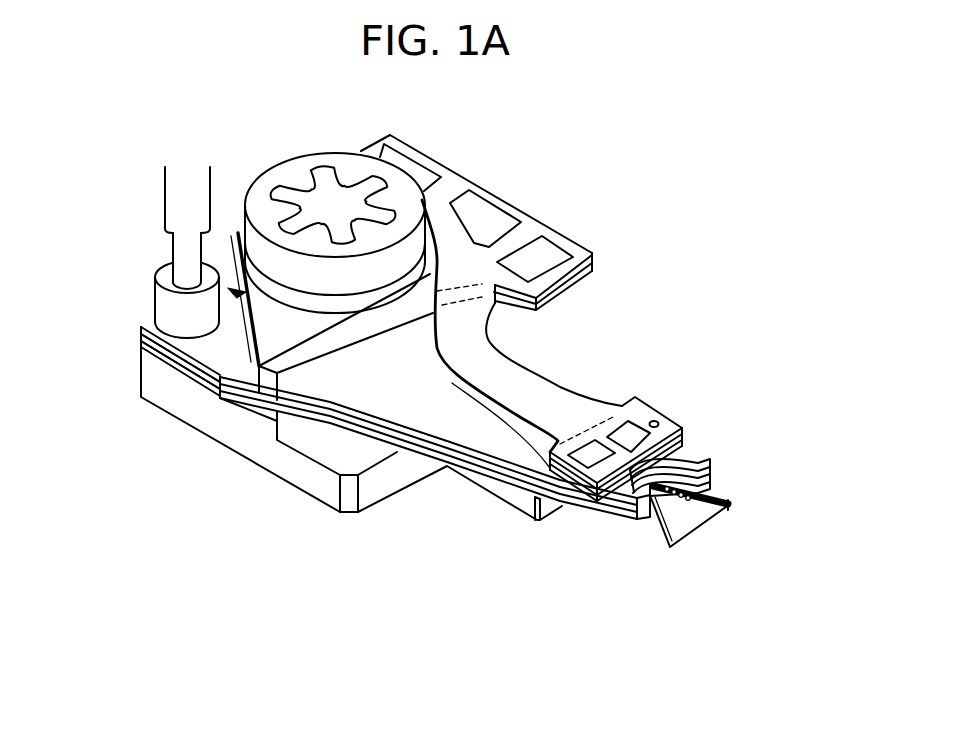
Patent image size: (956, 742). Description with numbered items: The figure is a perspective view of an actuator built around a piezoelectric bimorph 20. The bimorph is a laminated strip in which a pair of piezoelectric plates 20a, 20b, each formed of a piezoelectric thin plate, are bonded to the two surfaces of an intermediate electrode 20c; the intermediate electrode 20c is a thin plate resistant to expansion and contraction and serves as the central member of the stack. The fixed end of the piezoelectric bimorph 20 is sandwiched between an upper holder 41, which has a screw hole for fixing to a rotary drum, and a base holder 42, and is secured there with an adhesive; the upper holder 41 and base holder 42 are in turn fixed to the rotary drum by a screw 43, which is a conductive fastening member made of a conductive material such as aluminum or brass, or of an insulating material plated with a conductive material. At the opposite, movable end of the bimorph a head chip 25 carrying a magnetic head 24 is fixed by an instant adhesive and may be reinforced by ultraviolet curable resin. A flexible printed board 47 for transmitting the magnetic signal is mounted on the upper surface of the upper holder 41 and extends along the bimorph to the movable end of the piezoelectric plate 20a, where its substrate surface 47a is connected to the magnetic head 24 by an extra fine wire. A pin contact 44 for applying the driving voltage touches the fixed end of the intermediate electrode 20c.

The piezoelectric bimorph 20 is at (586, 521).
The piezoelectric plate 20a is at (708, 457).
The piezoelectric plate 20b is at (141, 343).
The intermediate electrode 20c is at (143, 332).
The magnetic head 24 is at (723, 516).
The head chip 25 is at (656, 541).
The upper holder 41 is at (280, 328).
The base holder 42 is at (193, 410).
The screw 43 is at (335, 158).
The pin contact 44 is at (181, 251).
The flexible printed board 47 is at (530, 229).
The substrate surface 47a is at (628, 433).